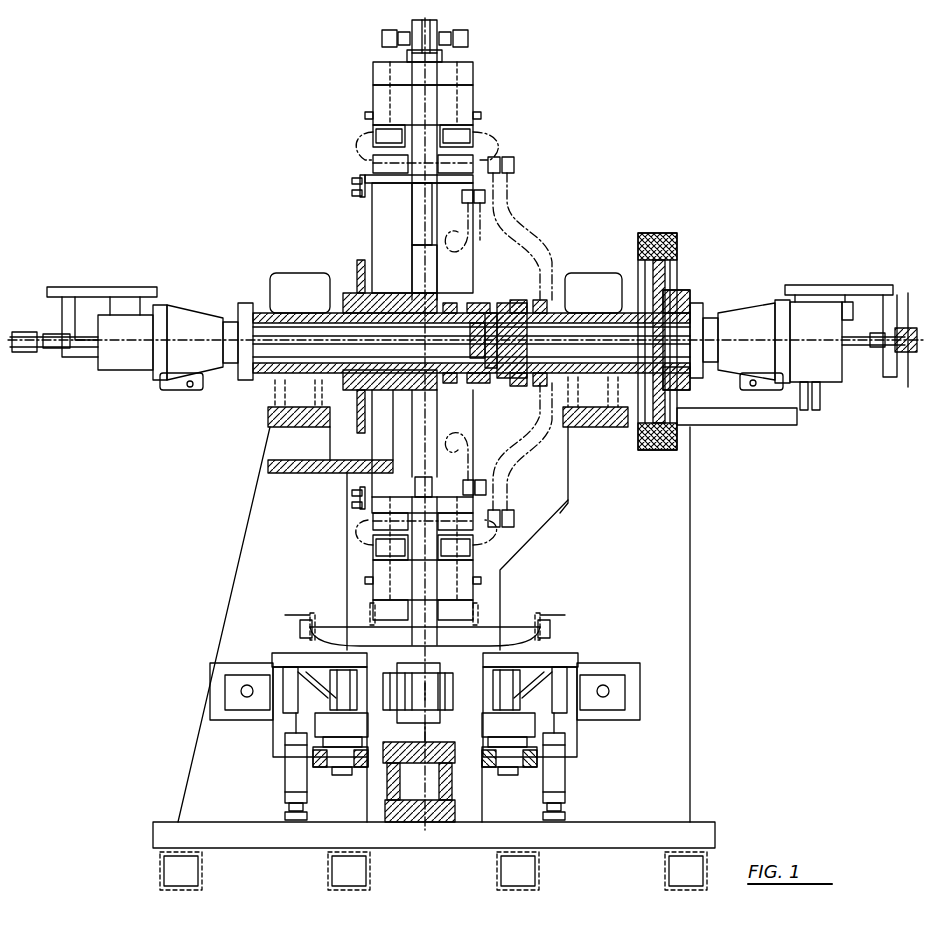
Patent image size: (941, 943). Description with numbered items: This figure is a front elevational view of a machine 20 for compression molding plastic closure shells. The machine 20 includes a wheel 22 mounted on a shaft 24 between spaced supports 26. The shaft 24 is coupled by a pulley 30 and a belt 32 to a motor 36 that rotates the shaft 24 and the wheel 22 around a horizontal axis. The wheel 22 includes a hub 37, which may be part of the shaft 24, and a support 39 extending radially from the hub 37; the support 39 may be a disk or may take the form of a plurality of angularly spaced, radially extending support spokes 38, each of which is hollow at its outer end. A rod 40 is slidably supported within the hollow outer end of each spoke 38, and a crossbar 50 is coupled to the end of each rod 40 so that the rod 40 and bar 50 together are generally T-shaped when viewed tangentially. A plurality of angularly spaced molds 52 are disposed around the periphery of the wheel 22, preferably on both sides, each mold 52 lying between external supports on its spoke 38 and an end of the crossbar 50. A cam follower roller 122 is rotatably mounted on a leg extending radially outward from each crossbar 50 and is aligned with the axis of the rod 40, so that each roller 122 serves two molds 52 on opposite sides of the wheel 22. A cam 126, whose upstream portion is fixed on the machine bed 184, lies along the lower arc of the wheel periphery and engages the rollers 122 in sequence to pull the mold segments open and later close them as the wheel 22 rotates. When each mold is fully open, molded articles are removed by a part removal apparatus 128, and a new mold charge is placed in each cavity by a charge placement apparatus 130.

The machine 20 is at (466, 453).
The wheel 22 is at (432, 306).
The shaft 24 is at (570, 316).
The supports 26 is at (673, 521).
The pulley 30 is at (662, 272).
The belt 32 is at (668, 236).
The drive motor 36 is at (130, 325).
The hub 37 is at (400, 386).
The support spokes 38 is at (400, 231).
The support 39 is at (398, 212).
The rod 40 is at (428, 212).
The crossbar 50 is at (380, 70).
The molds 52 is at (365, 125).
The cam follower roller 122 is at (438, 24).
The cam 126 is at (408, 800).
The part removal apparatus 128 is at (368, 605).
The charge placement apparatus 130 is at (278, 640).
The machine bed 184 is at (652, 835).